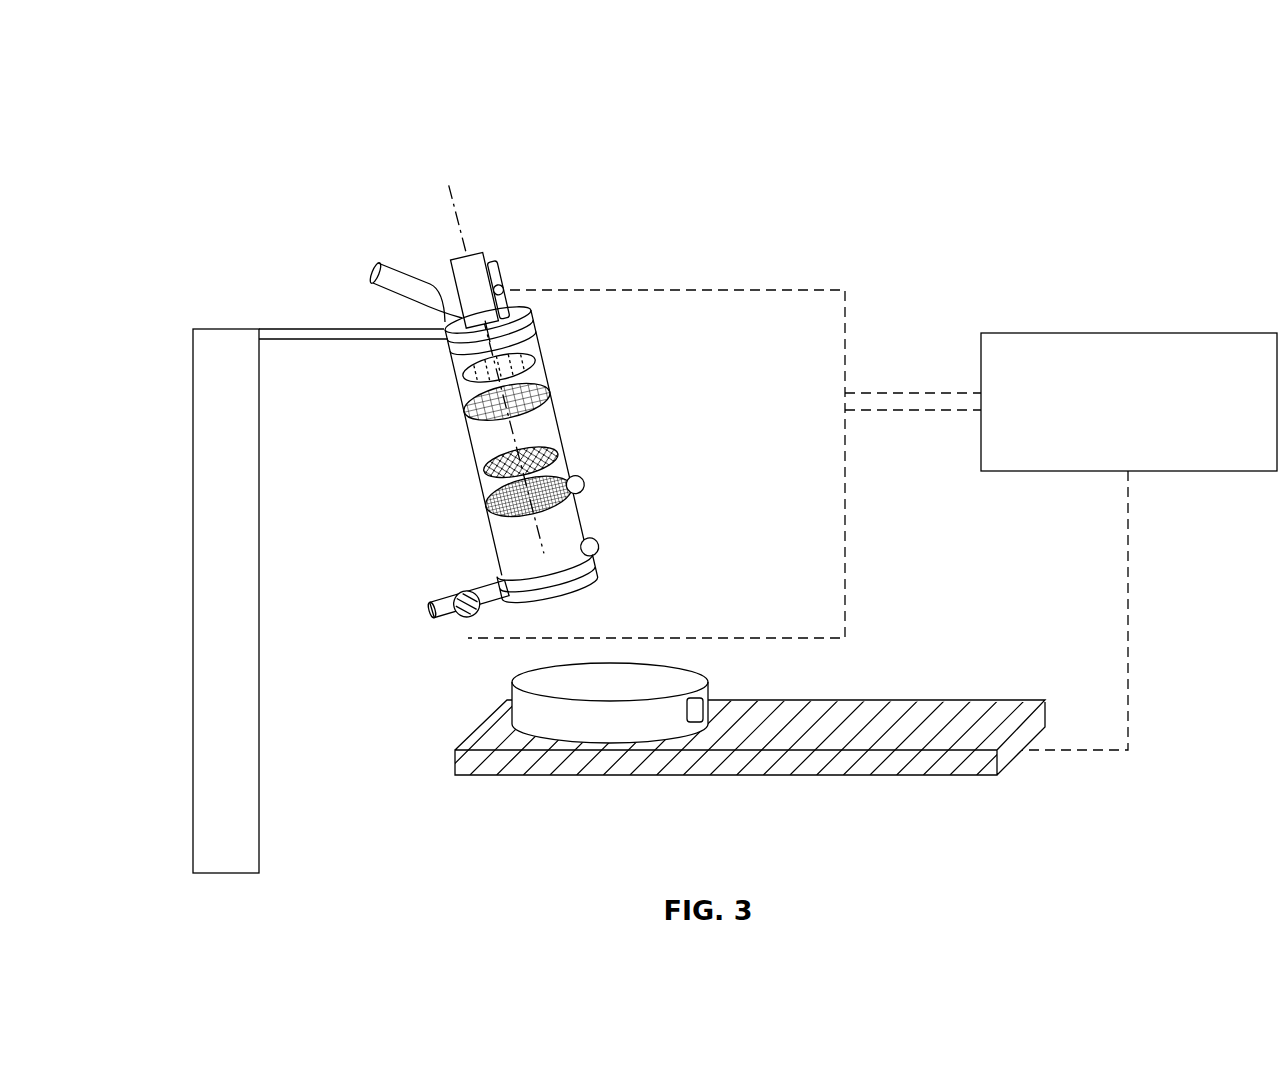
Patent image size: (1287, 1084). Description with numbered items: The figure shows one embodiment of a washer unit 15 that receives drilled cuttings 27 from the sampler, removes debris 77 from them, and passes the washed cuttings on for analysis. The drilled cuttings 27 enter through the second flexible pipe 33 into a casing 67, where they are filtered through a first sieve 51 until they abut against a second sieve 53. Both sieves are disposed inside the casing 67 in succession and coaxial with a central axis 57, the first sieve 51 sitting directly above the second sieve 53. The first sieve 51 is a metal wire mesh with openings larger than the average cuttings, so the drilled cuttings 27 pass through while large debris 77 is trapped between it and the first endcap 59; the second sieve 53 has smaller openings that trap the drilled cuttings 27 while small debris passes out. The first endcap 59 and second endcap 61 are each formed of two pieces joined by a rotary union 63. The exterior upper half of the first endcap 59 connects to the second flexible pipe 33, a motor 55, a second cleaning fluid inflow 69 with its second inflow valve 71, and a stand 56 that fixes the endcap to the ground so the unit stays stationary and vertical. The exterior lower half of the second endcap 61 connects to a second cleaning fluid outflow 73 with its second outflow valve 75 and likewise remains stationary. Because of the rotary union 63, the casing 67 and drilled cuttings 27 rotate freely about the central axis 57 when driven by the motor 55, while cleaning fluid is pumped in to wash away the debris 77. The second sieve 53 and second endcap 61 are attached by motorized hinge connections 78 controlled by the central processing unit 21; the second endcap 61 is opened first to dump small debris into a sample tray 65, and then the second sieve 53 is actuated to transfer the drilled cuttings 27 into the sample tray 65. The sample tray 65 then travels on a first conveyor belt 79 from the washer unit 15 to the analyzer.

The washer unit 15 is at (1150, 97).
The central processing unit 21 is at (1114, 446).
The drilled cuttings 27 is at (553, 457).
The second flexible pipe 33 is at (370, 272).
The first sieve 51 is at (465, 413).
The second sieve 53 is at (487, 505).
The motor 55 is at (455, 262).
The stand 56 is at (193, 603).
The central axis 57 is at (452, 197).
The first endcap 59 is at (448, 350).
The second endcap 61 is at (597, 560).
The rotary union 63 is at (540, 312).
The sample tray 65 is at (610, 740).
The casing 67 is at (556, 408).
The second cleaning fluid inflow 69 is at (503, 268).
The second inflow valve 71 is at (507, 288).
The second cleaning fluid outflow 73 is at (430, 612).
The second outflow valve 75 is at (467, 623).
The debris 77 is at (523, 358).
The motorized hinge connections 78 is at (600, 547).
The first conveyor belt 79 is at (847, 777).